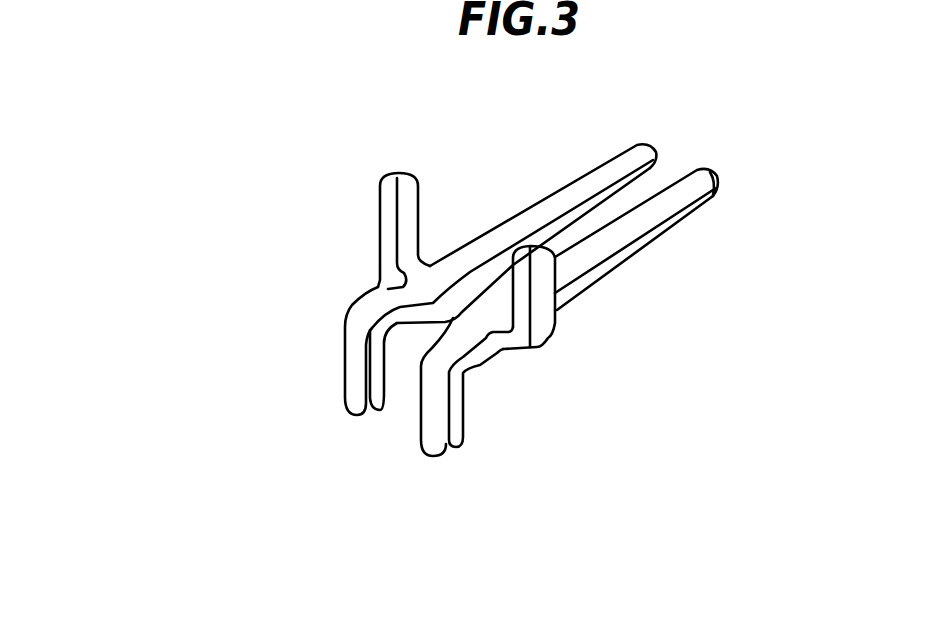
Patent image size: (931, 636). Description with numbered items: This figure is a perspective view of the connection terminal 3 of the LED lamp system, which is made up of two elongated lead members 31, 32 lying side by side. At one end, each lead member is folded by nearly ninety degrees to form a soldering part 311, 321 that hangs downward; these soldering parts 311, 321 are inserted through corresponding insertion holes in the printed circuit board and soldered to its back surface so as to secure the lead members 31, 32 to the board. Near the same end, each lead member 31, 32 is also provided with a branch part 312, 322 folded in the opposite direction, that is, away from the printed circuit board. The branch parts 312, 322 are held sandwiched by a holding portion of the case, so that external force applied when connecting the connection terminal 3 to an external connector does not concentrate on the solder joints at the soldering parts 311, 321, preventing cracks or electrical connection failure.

The connection terminal 3 is at (350, 106).
The lead member 31 is at (538, 213).
The branch part 312 is at (387, 218).
The soldering part 311 is at (352, 369).
The lead member 32 is at (633, 231).
The branch part 322 is at (543, 281).
The soldering part 321 is at (440, 420).